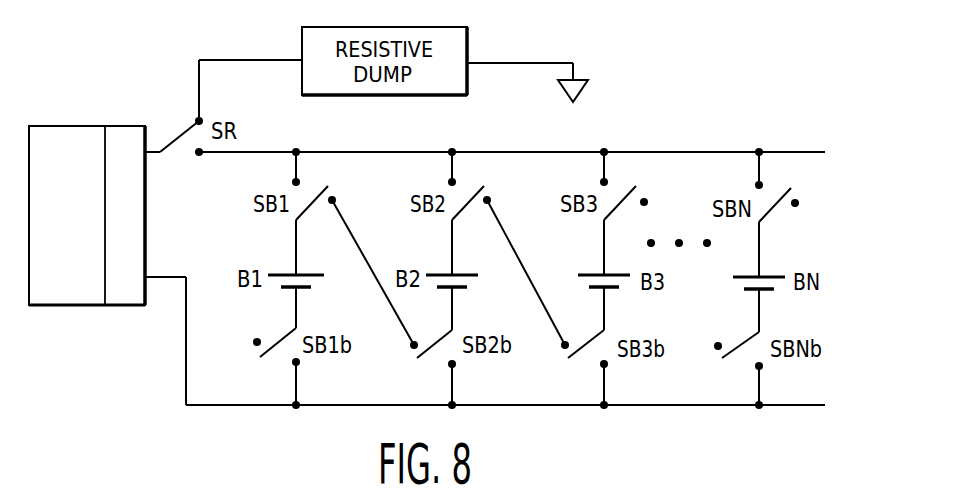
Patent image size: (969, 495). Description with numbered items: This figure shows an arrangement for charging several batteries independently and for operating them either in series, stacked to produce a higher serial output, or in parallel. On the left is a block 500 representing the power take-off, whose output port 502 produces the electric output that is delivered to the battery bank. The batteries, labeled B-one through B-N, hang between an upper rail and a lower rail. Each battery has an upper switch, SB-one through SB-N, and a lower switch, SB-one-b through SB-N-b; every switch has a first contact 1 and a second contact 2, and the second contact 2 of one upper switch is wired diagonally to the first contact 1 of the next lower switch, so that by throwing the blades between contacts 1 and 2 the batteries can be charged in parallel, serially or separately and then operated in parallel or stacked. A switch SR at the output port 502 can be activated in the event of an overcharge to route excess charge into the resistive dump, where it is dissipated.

The battery pack 500 is at (52, 125).
The output port 502 is at (124, 136).
The first switch contact 1 is at (296, 182).
The second switch contact 2 is at (336, 200).